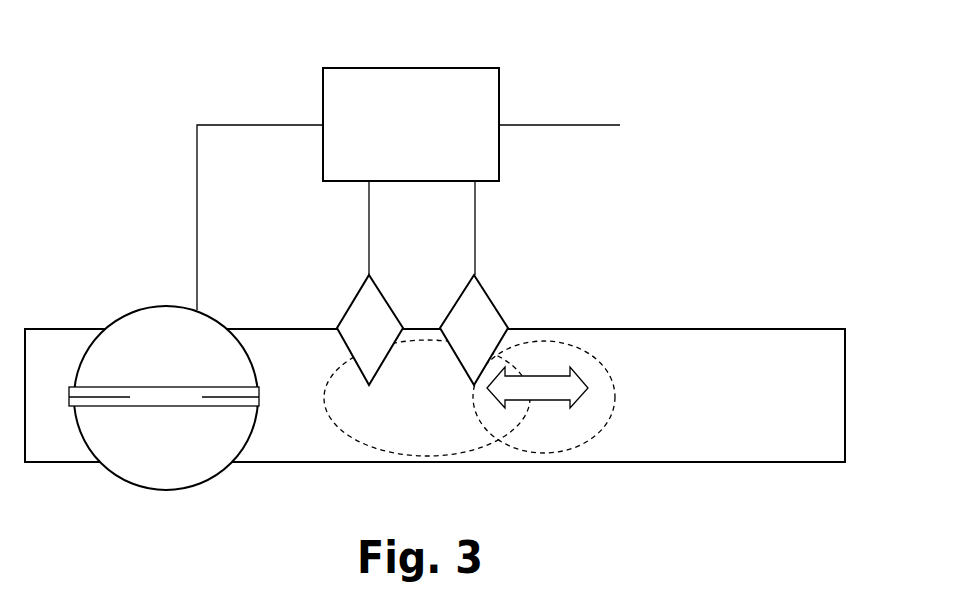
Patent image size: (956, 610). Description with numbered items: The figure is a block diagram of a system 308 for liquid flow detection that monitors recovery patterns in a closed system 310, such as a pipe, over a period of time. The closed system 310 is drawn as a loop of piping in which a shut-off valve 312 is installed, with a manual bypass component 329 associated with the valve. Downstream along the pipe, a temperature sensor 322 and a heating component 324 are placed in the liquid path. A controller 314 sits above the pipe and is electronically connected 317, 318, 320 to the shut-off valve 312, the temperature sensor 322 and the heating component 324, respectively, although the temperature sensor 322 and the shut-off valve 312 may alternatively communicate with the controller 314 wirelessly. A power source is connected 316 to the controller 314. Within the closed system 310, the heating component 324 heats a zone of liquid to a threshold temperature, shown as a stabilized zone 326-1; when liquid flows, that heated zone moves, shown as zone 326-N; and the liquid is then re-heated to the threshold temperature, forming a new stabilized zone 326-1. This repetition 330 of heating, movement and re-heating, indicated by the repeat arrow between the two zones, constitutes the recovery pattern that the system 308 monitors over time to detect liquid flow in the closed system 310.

The system for liquid flow detection 308 is at (147, 58).
The closed system 310 is at (50, 345).
The shut-off valve 312 is at (162, 314).
The controller 314 is at (348, 77).
The power source connection 316 is at (560, 121).
The electronic connection to shut-off valve 317 is at (242, 123).
The electronic connection to temperature sensor 318 is at (369, 215).
The electronic connection to heating component 320 is at (475, 215).
The temperature sensor 322 is at (360, 290).
The heating component 324 is at (488, 296).
The stabilized zone 326-1 is at (388, 452).
The flow zone 326-N is at (562, 455).
The manual bypass component 329 is at (248, 355).
The repetition 330 is at (548, 376).